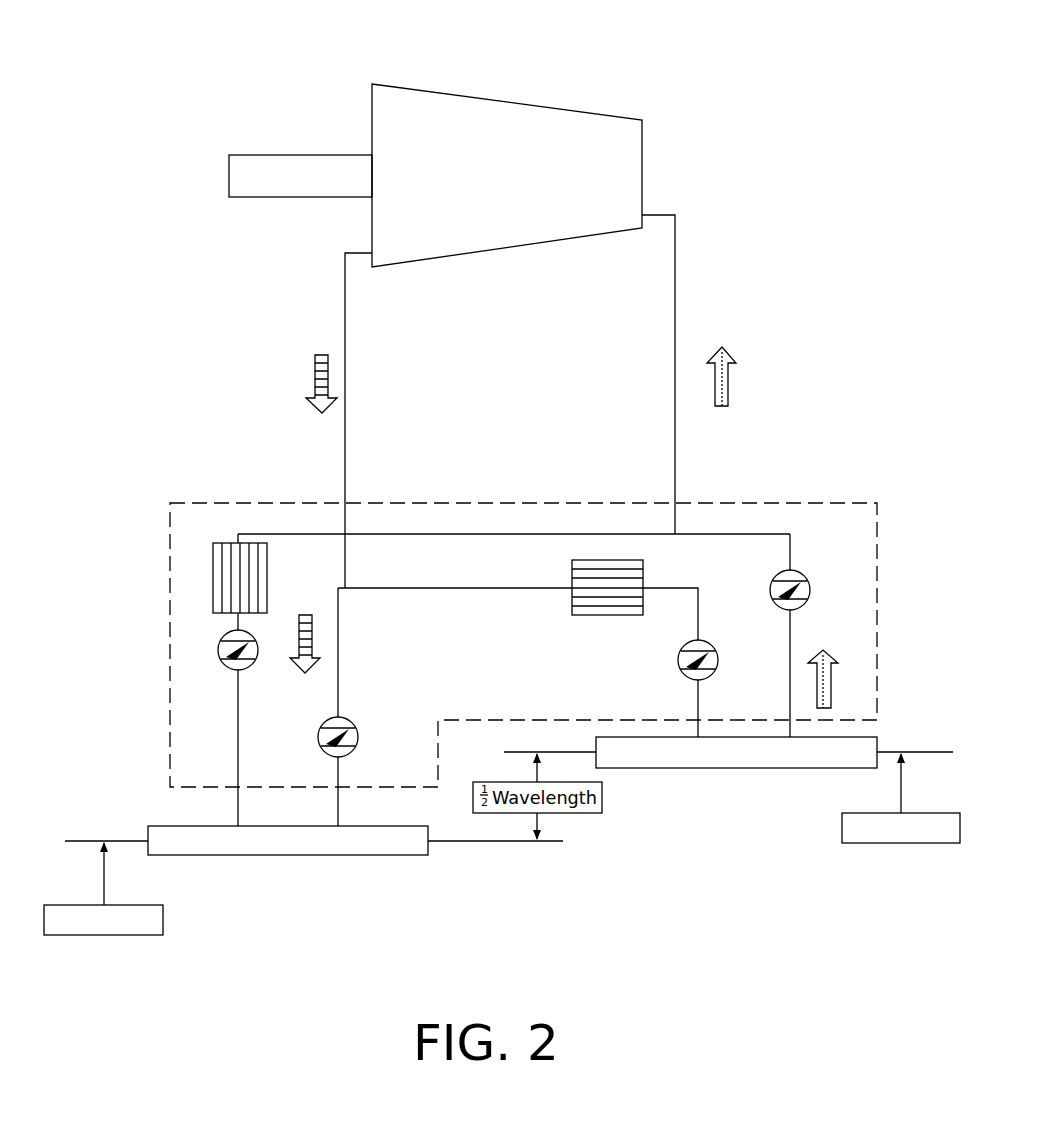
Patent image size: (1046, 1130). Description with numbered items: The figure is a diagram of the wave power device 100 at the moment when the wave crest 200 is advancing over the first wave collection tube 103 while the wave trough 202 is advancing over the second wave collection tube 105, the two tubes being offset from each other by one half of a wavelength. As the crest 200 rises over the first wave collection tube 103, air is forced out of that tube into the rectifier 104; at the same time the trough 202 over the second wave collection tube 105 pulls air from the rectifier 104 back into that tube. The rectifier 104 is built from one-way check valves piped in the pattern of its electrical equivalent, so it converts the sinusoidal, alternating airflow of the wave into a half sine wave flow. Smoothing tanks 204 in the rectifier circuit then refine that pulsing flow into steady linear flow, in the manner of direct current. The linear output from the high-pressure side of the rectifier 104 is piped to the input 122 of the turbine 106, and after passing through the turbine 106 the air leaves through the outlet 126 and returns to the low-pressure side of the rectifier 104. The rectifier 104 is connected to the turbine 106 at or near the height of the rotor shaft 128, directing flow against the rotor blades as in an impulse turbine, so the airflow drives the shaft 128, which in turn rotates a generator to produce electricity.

The wave power device 100 is at (575, 80).
The turbine 106 is at (627, 136).
The rotor shaft 128 is at (257, 155).
The outlet 126 is at (362, 248).
The input 122 is at (650, 208).
The rectifier 104 is at (763, 503).
The smoothing tanks 204 is at (268, 587).
The second wave collection tube 105 is at (265, 855).
The first wave collection tube 103 is at (738, 770).
The wave crest 200 is at (921, 839).
The wave trough 202 is at (124, 931).